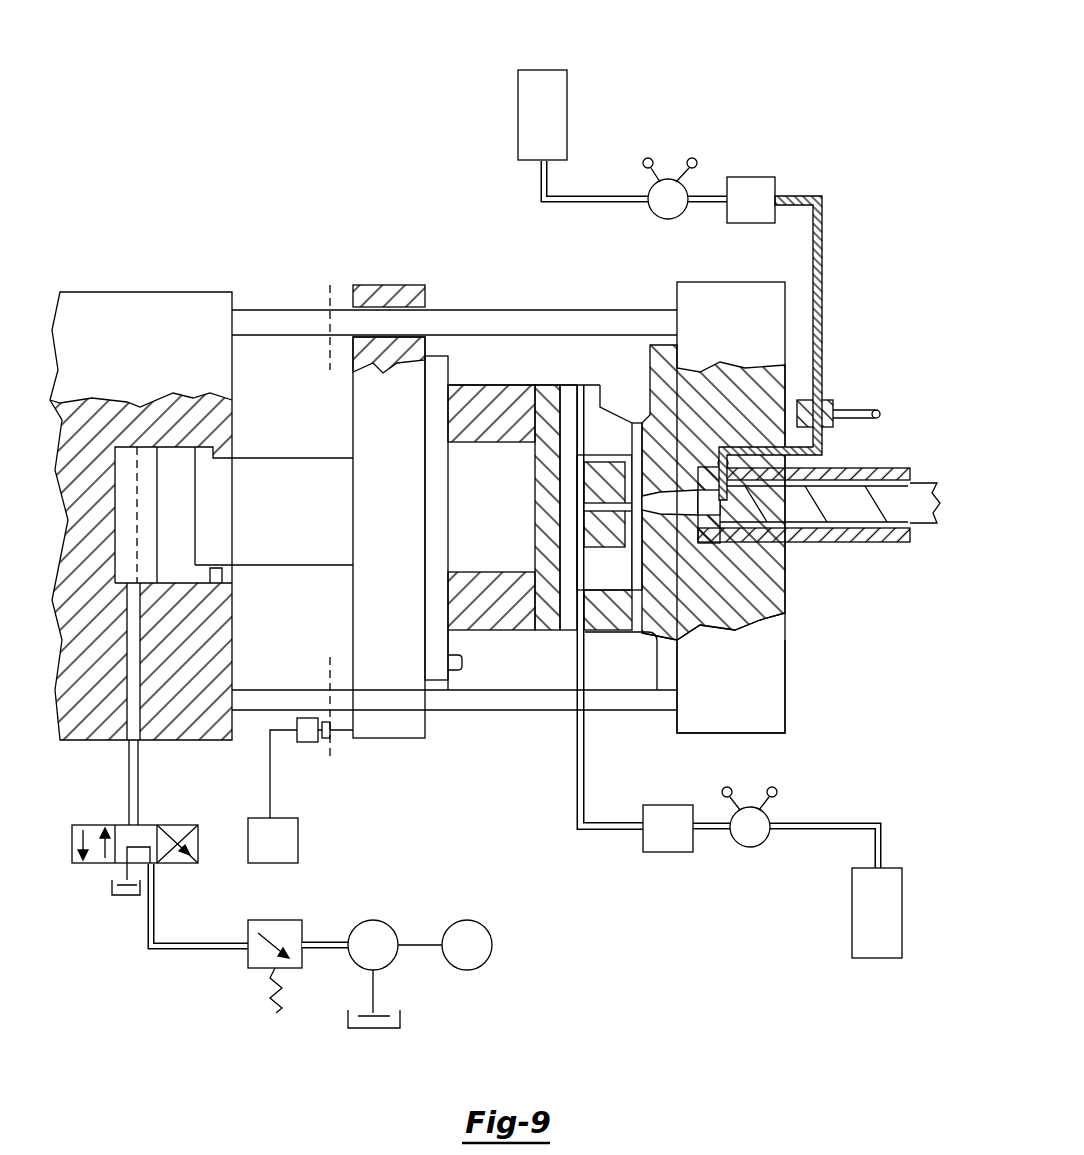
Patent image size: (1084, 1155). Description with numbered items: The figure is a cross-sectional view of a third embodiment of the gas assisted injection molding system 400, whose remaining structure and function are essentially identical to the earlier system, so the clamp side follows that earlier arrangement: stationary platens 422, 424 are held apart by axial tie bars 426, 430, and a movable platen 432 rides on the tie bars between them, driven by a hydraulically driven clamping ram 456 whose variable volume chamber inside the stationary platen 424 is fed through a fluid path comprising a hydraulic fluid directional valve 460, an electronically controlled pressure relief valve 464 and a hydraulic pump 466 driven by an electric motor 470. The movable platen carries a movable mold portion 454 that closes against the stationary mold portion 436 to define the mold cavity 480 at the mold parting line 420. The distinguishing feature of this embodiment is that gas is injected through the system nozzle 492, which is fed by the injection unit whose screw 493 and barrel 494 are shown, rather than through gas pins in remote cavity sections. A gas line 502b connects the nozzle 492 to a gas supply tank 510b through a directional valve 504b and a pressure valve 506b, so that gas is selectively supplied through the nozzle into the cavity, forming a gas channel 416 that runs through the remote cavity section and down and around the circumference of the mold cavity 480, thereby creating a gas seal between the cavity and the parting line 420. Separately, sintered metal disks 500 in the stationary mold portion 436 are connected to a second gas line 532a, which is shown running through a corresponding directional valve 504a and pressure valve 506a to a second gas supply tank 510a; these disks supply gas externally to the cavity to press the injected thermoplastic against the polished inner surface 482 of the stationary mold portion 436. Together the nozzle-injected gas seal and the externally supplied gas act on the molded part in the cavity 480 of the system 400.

The gas assisted injection molding system 400 is at (230, 222).
The gas channel 416 is at (623, 427).
The mold parting line 420 is at (607, 415).
The stationary platen 422 is at (733, 710).
The clamp cylinder housing 424 is at (132, 345).
The tie bar 426 is at (280, 310).
The tie bar 430 is at (290, 700).
The movable platen 432 is at (395, 290).
The stationary mold portion 436 is at (662, 363).
The mold half 454 is at (525, 415).
The piston rod 456 is at (287, 487).
The directional control valve 460 is at (128, 712).
The pressure relief valve 464 is at (258, 952).
The hydraulic pump 466 is at (388, 925).
The motor 470 is at (480, 958).
The mold cavity 480 is at (690, 380).
The polished inner surface 482 is at (695, 633).
The nozzle 492 is at (700, 560).
The screw 493 is at (870, 505).
The barrel 494 is at (923, 488).
The sintered metal disks 500 is at (555, 470).
The gas line 502b is at (618, 195).
The valve 504a is at (653, 847).
The directional valve 504b is at (763, 177).
The pump 506a is at (750, 835).
The pressure valve 506b is at (668, 170).
The reservoir 510a is at (860, 922).
The gas supply tank 510b is at (540, 80).
The conduit 532a is at (580, 778).